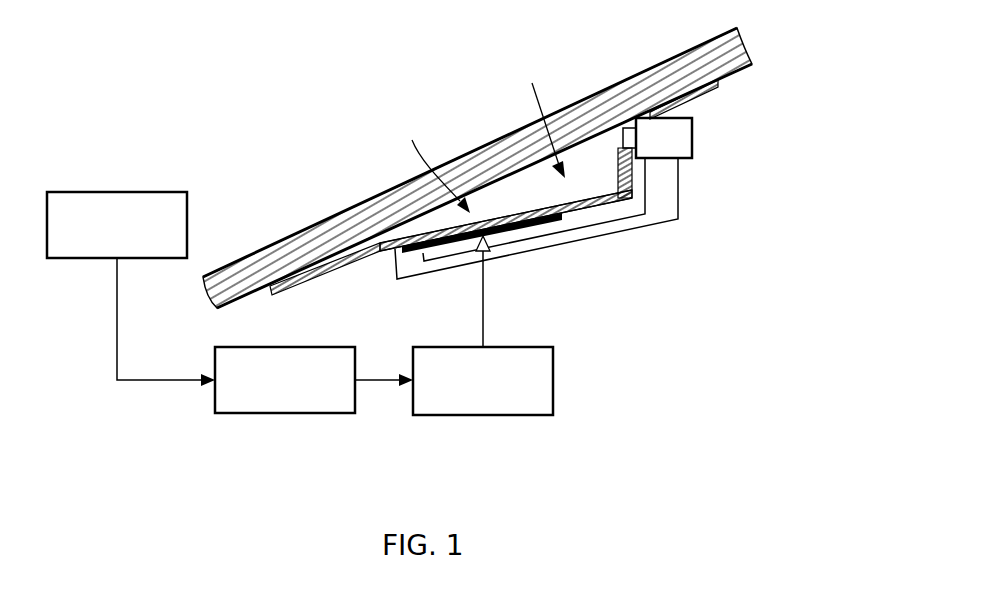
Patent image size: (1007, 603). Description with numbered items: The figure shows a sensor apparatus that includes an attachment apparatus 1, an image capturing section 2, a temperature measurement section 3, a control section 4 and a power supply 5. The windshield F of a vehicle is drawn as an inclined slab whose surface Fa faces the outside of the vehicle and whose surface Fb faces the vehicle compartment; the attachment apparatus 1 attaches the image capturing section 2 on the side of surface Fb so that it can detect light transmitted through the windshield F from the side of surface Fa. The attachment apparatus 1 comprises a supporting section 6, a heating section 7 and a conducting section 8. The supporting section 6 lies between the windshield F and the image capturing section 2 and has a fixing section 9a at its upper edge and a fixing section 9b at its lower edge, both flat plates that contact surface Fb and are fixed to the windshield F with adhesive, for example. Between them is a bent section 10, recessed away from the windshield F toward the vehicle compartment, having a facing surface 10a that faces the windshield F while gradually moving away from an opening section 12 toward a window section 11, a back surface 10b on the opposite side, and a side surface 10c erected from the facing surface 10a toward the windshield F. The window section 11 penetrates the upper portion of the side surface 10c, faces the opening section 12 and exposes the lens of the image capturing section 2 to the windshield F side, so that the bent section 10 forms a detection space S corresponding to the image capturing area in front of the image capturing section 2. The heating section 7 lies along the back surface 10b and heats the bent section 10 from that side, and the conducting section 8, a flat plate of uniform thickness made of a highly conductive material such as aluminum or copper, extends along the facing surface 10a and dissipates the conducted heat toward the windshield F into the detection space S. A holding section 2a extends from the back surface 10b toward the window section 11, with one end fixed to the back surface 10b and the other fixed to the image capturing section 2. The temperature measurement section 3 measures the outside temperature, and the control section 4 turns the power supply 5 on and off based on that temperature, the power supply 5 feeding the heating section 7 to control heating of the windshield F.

The attachment apparatus 1 is at (435, 170).
The image capturing section 2 is at (694, 141).
The holding section 2a is at (680, 200).
The temperature measurement section 3 is at (77, 192).
The control section 4 is at (248, 347).
The power supply 5 is at (553, 378).
The supporting section 6 is at (516, 199).
The heating section 7 is at (510, 212).
The conducting section 8 is at (406, 190).
The fixing section 9a is at (692, 93).
The fixing section 9b is at (313, 275).
The bent section 10 is at (516, 175).
The facing surface 10a is at (517, 208).
The back surface 10b is at (573, 212).
The side surface 10c is at (617, 170).
The window section 11 is at (618, 142).
The opening section 12 is at (456, 163).
The windshield F is at (675, 82).
The surface Fa is at (718, 43).
The surface Fb is at (734, 66).
The detection space S is at (543, 122).